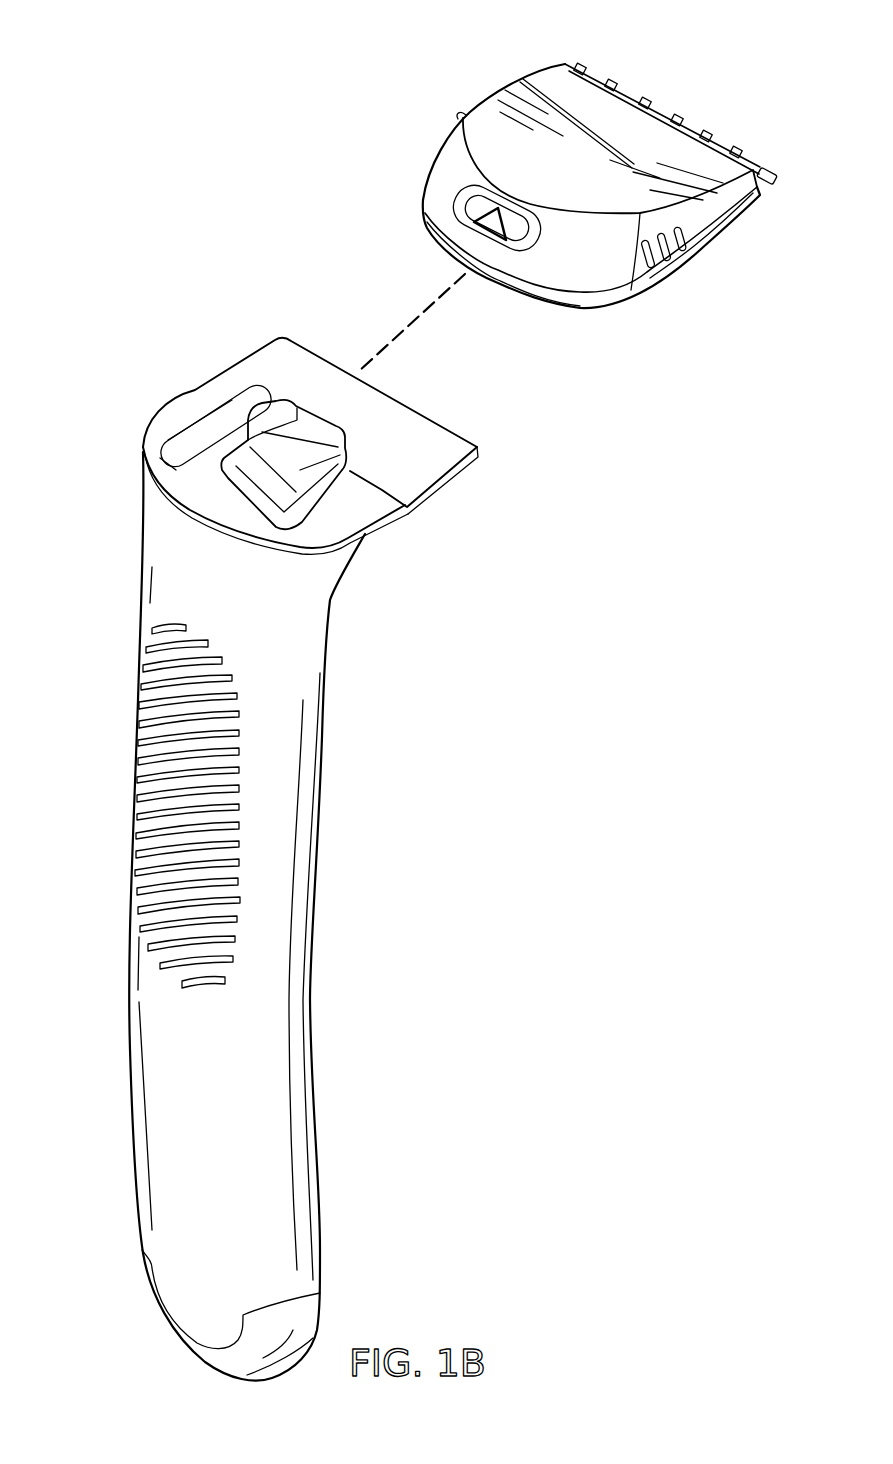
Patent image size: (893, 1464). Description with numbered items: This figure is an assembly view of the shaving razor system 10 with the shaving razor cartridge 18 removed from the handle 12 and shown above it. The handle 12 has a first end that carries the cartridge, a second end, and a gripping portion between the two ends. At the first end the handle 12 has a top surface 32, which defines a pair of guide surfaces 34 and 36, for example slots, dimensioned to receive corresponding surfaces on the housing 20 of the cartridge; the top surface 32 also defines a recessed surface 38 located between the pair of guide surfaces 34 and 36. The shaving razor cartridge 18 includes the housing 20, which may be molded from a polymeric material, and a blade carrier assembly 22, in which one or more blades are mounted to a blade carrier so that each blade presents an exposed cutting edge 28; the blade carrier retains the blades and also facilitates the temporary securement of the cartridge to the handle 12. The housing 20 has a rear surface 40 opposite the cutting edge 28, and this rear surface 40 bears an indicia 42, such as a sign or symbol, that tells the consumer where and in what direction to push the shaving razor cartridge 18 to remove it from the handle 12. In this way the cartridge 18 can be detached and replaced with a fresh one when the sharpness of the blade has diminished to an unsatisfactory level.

The shaving razor system 10 is at (92, 328).
The handle 12 is at (130, 1043).
The shaving razor cartridge 18 is at (440, 162).
The housing 20 is at (563, 63).
The blade carrier assembly 22 is at (742, 118).
The cutting edge 28 is at (658, 106).
The top surface 32 is at (175, 412).
The guide surface 34 is at (230, 408).
The guide surface 36 is at (372, 473).
The recessed surface 38 is at (250, 455).
The rear surface 40 is at (465, 228).
The indicia 42 is at (468, 203).